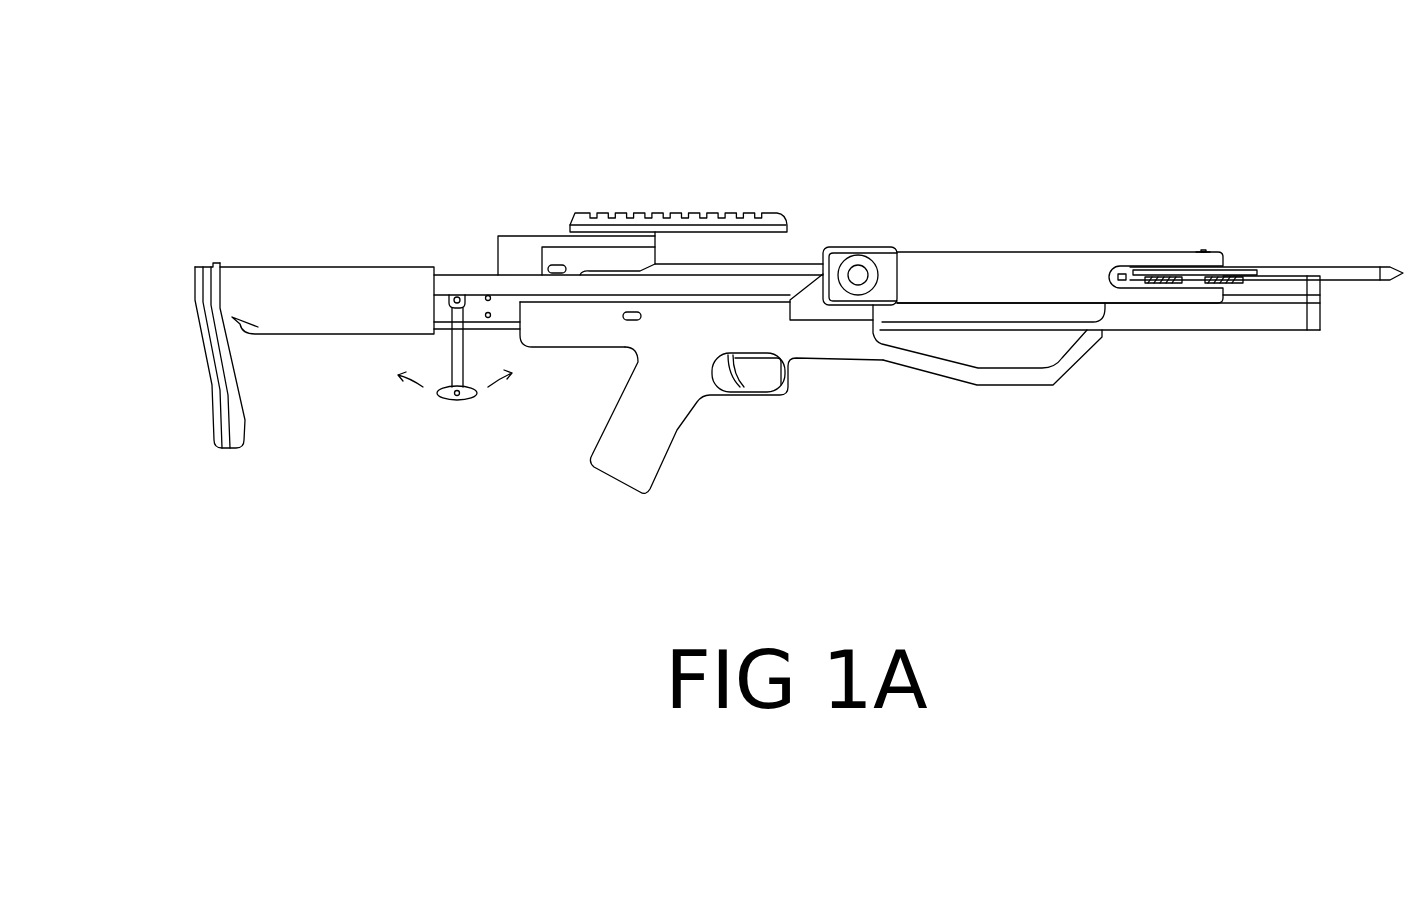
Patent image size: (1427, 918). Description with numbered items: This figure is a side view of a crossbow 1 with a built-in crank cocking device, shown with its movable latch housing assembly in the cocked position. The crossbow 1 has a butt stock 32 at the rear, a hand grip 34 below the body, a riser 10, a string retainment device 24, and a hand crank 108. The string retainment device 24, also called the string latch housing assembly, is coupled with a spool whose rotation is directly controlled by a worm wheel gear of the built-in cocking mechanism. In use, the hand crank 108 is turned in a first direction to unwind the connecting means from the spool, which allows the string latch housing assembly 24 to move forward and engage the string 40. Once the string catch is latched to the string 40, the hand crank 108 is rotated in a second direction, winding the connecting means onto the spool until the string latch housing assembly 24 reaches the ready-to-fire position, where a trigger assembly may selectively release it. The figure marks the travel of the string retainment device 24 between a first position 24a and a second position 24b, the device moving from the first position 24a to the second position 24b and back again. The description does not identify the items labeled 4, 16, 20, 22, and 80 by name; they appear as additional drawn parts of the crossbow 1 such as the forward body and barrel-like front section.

The crossbow 1 is at (833, 112).
The barrel 4 is at (1350, 270).
The riser 10 is at (813, 310).
The barrel housing 16 is at (1035, 272).
The bolt assembly 20 is at (1240, 270).
The forend 22 is at (1167, 316).
The string retainment device 24 is at (607, 243).
The first position 24a is at (568, 257).
The second position 24b is at (1213, 222).
The butt stock 32 is at (225, 368).
The hand grip 34 is at (640, 402).
The string 40 is at (735, 272).
The pivot 80 is at (462, 290).
The hand crank 108 is at (455, 340).